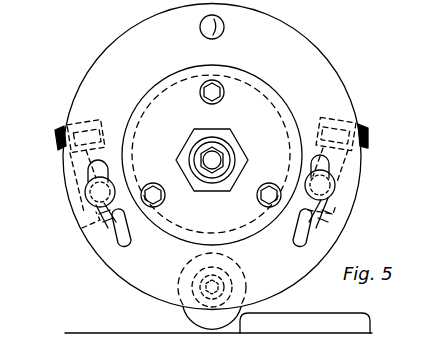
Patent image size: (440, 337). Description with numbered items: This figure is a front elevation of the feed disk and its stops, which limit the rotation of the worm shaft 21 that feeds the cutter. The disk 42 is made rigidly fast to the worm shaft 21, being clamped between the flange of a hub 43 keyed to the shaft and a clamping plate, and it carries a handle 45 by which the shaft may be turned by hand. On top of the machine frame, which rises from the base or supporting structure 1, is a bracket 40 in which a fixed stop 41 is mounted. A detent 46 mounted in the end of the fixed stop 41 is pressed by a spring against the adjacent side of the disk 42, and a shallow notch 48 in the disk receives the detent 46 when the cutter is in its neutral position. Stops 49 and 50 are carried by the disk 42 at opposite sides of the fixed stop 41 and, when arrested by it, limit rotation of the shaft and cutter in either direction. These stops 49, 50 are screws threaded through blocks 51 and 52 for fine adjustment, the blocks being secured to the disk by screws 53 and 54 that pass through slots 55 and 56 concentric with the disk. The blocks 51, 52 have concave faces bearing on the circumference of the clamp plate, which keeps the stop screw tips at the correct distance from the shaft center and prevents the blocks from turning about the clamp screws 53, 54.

The base or supporting structure 1 is at (85, 333).
The worm shaft 21 is at (212, 160).
The bracket 40 is at (270, 321).
The fixed stop 41 is at (233, 272).
The disk 42 is at (90, 95).
The hub 43 is at (160, 100).
The handle 45 is at (200, 29).
The detent 46 is at (240, 292).
The shallow notch 48 is at (244, 260).
The stop 49 is at (111, 238).
The stop 50 is at (340, 232).
The block 51 is at (82, 228).
The block 52 is at (345, 210).
The screw 53 is at (90, 191).
The screw 54 is at (330, 185).
The slot 55 is at (124, 240).
The slot 56 is at (302, 237).